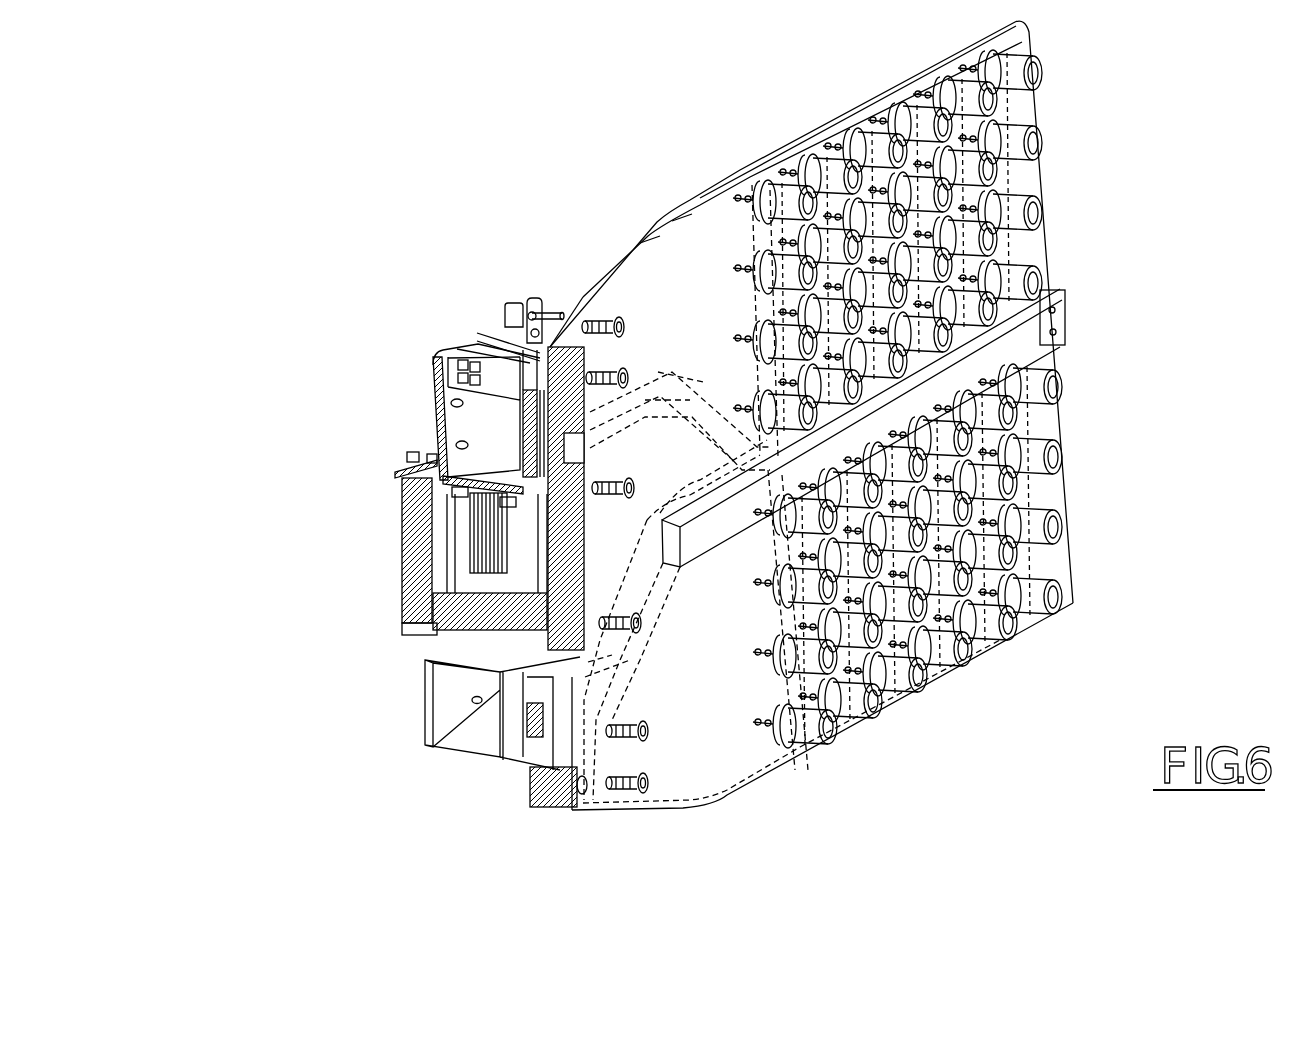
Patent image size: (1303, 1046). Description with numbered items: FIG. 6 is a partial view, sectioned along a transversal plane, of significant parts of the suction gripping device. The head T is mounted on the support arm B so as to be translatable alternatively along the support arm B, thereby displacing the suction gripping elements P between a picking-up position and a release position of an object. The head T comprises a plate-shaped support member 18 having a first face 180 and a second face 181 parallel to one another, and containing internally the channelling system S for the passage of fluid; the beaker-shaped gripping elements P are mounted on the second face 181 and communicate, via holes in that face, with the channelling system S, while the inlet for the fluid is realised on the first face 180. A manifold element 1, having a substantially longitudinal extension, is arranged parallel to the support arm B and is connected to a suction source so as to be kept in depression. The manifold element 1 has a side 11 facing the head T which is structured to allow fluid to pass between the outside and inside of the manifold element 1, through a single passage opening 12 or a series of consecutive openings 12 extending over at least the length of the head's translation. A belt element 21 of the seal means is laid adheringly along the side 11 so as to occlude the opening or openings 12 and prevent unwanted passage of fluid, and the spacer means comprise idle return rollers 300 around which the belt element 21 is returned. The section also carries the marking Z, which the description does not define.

The manifold element 1 is at (432, 413).
The side 11 is at (462, 360).
The passage opening 12 is at (425, 378).
The plate-shaped support member 18 is at (862, 100).
The first face 180 is at (682, 205).
The second face 181 is at (684, 768).
The belt element 21 is at (550, 330).
The idle return rollers 300 is at (500, 315).
The support arm B is at (437, 527).
The suction gripping element P is at (787, 150).
The channelling system S is at (655, 385).
The head T is at (706, 691).
The bracket Z is at (490, 322).